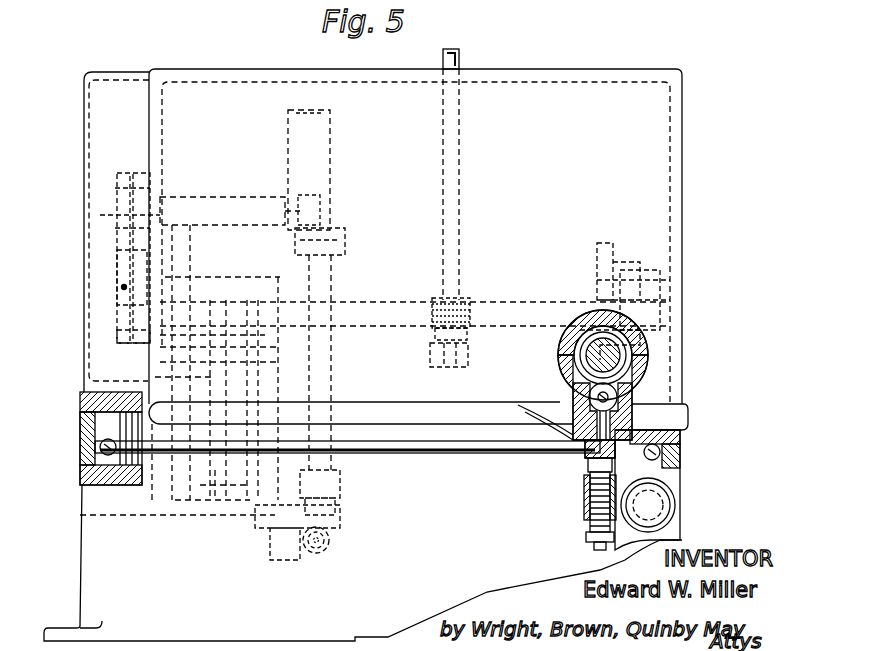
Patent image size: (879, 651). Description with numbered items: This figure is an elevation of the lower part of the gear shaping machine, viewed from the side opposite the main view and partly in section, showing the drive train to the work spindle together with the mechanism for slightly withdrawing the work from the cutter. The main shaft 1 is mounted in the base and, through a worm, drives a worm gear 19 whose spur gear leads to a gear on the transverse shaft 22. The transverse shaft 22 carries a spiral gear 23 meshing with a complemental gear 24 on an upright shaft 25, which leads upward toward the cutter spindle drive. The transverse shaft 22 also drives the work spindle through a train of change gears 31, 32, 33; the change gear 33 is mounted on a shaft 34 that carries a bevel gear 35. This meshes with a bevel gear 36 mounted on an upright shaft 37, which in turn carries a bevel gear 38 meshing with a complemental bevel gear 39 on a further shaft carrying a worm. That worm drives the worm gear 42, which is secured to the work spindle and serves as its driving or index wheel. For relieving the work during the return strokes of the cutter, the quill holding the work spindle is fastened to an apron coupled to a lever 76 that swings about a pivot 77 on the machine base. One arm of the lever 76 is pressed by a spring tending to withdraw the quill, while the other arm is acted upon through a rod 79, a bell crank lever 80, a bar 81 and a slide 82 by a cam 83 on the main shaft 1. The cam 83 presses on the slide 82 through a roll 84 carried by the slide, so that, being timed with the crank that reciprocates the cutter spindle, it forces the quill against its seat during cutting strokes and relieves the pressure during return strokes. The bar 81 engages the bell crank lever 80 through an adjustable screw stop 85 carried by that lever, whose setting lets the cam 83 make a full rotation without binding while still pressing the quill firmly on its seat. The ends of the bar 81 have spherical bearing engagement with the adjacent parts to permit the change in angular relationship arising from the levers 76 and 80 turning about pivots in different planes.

The main shaft 1 is at (588, 362).
The worm gear 19 is at (605, 243).
The transverse shaft 22 is at (532, 318).
The spiral gear 23 is at (462, 297).
The complemental gear 24 is at (470, 315).
The upright shaft 25 is at (462, 210).
The change gear 31 is at (118, 335).
The change gear 32 is at (120, 287).
The change gear 33 is at (120, 188).
The shaft 34 is at (212, 197).
The bevel gear 35 is at (308, 195).
The bevel gear 36 is at (345, 228).
The upright shaft 37 is at (331, 380).
The bevel gear 38 is at (340, 518).
The complemental bevel gear 39 is at (332, 552).
The worm gear 42 is at (286, 555).
The lever 76 is at (84, 433).
The pivot 77 is at (80, 397).
The rod 79 is at (455, 455).
The bell crank lever 80 is at (676, 482).
The bar 81 is at (584, 474).
The slide 82 is at (573, 425).
The cam 83 is at (584, 346).
The roll 84 is at (600, 397).
The adjustable screw stop 85 is at (590, 512).